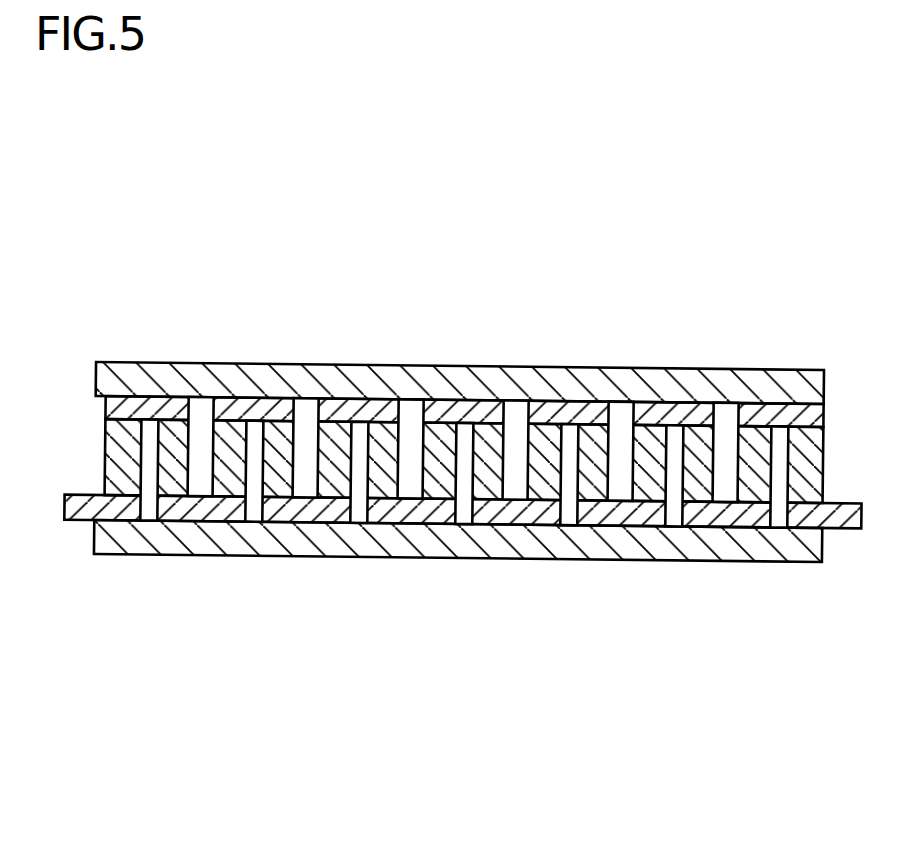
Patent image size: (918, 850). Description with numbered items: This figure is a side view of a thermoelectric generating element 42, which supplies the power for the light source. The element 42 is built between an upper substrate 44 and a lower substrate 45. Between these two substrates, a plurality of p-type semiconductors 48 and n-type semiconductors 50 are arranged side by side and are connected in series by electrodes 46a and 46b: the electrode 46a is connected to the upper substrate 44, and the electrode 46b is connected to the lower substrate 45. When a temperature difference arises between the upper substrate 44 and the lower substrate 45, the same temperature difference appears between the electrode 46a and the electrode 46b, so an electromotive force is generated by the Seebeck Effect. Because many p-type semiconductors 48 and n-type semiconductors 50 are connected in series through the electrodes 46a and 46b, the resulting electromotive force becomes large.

The thermoelectric generating element 42 is at (512, 240).
The upper substrate 44 is at (327, 366).
The lower substrate 45 is at (383, 543).
The electrode 46a is at (308, 400).
The electrode 46b is at (170, 507).
The p-type semiconductor 48 is at (338, 430).
The n-type semiconductor 50 is at (398, 422).